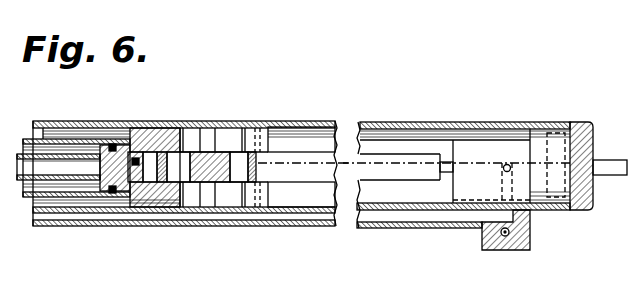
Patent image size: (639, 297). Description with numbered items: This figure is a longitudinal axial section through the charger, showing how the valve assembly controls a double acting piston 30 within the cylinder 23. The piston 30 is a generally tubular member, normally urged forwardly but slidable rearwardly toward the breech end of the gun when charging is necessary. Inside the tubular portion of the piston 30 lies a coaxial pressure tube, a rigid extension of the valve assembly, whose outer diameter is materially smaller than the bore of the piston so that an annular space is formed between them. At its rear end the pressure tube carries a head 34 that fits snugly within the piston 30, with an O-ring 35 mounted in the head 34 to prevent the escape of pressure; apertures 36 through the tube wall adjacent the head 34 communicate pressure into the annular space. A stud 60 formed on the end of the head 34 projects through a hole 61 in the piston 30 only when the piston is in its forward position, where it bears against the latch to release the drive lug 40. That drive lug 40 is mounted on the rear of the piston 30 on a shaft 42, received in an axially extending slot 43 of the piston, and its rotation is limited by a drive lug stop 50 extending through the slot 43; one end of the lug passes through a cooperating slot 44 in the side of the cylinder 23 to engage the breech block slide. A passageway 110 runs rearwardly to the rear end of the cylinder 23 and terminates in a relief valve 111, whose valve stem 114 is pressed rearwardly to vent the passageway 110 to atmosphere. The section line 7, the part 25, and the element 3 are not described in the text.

The section line 7- 7 is at (42, 160).
The cylinder 23 is at (208, 119).
The shaft 42 is at (201, 214).
The passageway 110 is at (268, 219).
The head 34 is at (107, 143).
The apertures 36 is at (95, 162).
The O-ring 35 is at (118, 183).
The stud 60 is at (141, 194).
The piston 30 is at (138, 128).
The hole 61 is at (162, 128).
The drive lug 40 is at (220, 153).
The drive lug stop 50 is at (260, 165).
The slot 43 is at (266, 182).
The relief valve 111 is at (487, 133).
The cooperating slot 44 is at (427, 155).
The valve stem 114 is at (440, 168).
The shaft 25 is at (613, 177).
The tube (partially visible) 3 is at (5, 127).